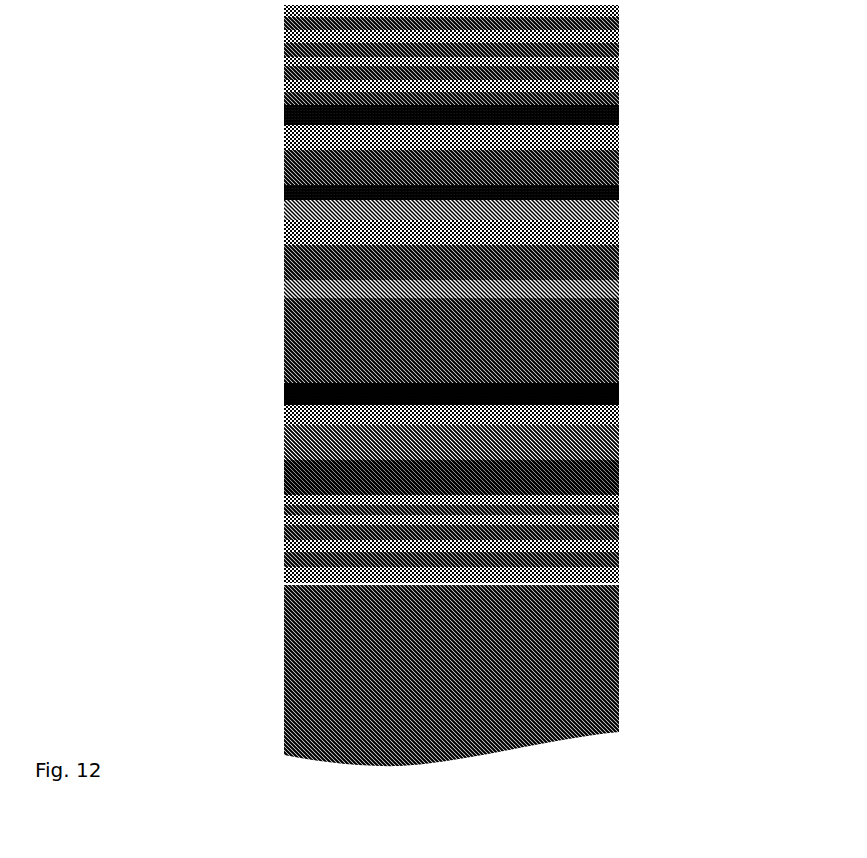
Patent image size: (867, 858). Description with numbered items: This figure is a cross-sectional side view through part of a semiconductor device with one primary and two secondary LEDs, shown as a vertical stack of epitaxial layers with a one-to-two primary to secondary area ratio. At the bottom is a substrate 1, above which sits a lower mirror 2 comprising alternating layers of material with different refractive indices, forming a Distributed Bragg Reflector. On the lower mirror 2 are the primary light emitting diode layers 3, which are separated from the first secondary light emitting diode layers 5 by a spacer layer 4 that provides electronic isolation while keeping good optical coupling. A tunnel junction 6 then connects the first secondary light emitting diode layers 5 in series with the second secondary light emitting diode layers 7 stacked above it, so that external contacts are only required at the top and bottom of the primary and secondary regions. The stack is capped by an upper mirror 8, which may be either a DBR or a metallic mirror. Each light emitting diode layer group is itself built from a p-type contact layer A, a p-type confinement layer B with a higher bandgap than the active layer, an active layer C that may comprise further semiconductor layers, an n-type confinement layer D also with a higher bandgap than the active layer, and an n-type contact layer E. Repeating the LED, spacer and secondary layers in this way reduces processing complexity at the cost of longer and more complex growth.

The substrate 1 is at (258, 581).
The lower mirror 2 is at (258, 477).
The primary light emitting diode layers 3 is at (258, 386).
The spacer layer 4 is at (258, 298).
The first secondary light emitting diode layers 5 is at (258, 205).
The tunnel junction 6 is at (268, 203).
The second secondary light emitting diode layers 7 is at (258, 110).
The upper mirror 8 is at (258, 5).
The p-type contact layer A is at (628, 473).
The p-type confinement layer B is at (628, 453).
The active layer C is at (630, 434).
The n-type confinement layer D is at (628, 415).
The n-type contact layer E is at (630, 390).